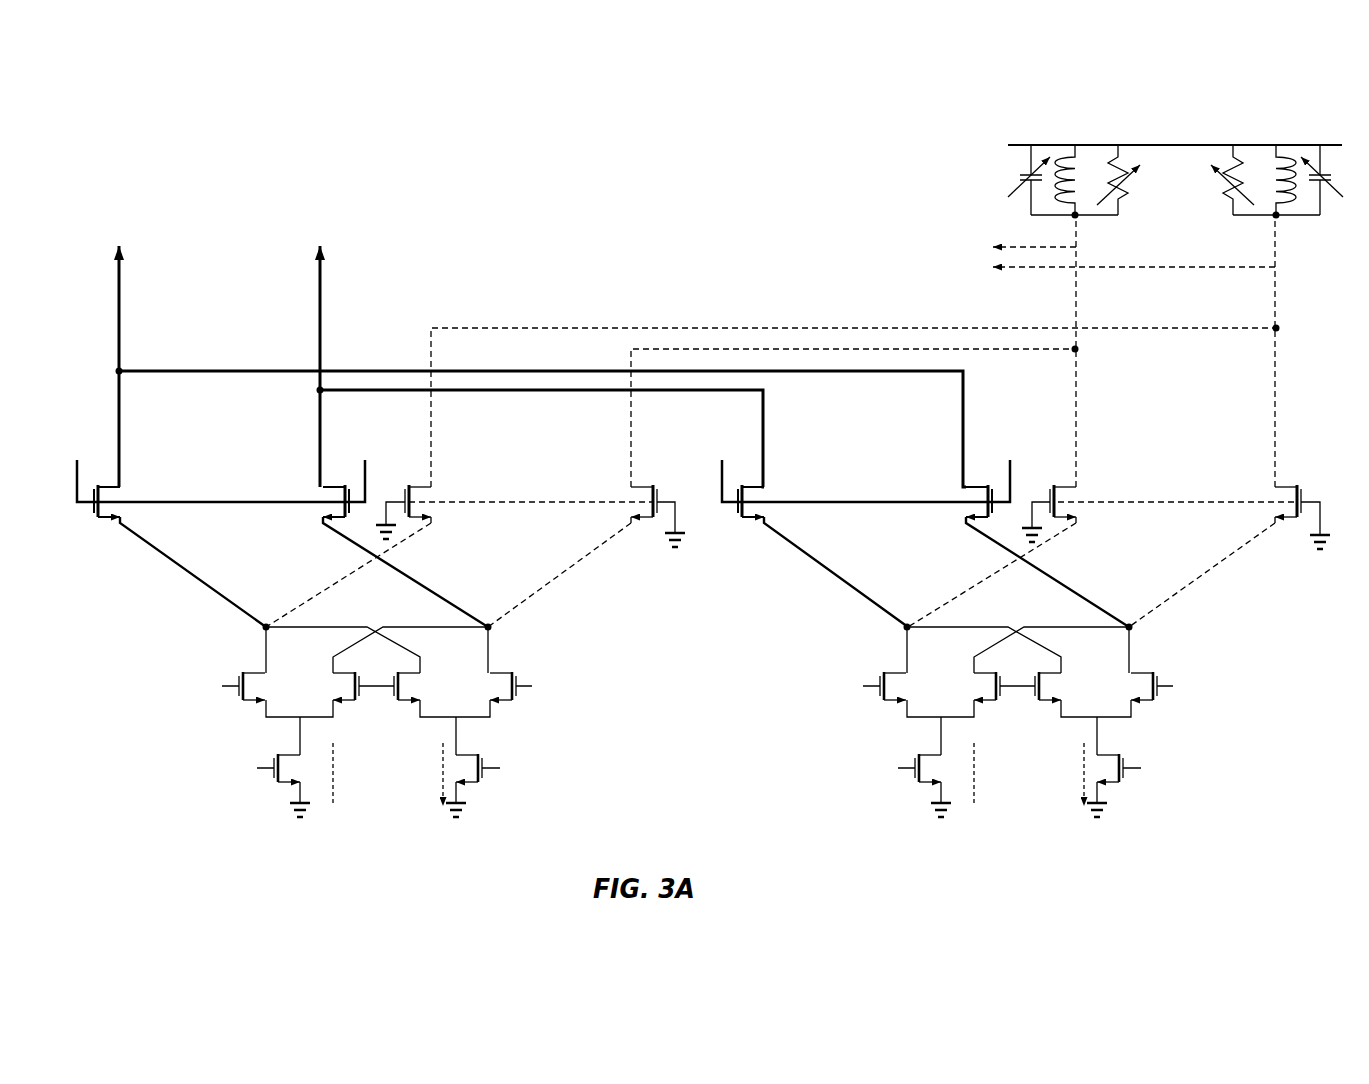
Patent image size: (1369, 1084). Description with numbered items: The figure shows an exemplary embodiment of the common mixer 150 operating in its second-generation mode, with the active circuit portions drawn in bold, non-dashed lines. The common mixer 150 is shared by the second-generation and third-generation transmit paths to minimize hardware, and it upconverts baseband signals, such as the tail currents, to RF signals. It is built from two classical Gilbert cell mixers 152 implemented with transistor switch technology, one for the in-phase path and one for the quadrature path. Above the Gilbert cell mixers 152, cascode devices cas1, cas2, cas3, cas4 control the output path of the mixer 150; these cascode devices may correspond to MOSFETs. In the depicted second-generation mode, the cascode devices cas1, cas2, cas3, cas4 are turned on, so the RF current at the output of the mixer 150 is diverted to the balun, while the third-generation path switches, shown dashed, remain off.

The common mixer 150 is at (696, 170).
The Gilbert cell mixer 152 is at (180, 760).
The cascode device cas1 is at (128, 498).
The cascode device cas2 is at (310, 498).
The cascode device cas3 is at (773, 498).
The cascode device cas4 is at (957, 498).